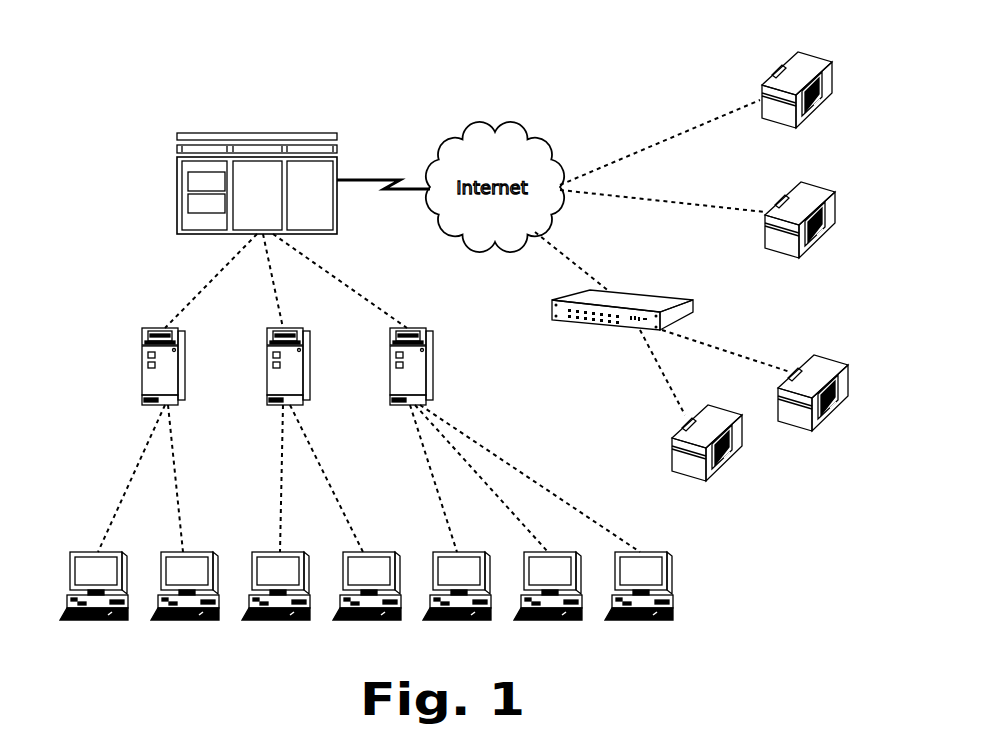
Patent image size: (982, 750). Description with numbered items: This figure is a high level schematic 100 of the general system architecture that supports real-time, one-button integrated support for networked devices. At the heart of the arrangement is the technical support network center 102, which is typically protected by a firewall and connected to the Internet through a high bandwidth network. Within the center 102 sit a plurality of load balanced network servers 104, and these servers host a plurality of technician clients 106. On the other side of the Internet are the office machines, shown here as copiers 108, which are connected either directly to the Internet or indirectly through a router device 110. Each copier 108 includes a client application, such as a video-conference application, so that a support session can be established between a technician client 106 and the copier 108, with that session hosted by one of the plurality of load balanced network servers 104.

The high level schematic 100 is at (171, 34).
The technical support network center 102 is at (177, 188).
The load balanced network servers 104 is at (142, 328).
The technician clients 106 is at (88, 552).
The copiers 108 is at (796, 122).
The router device 110 is at (552, 301).